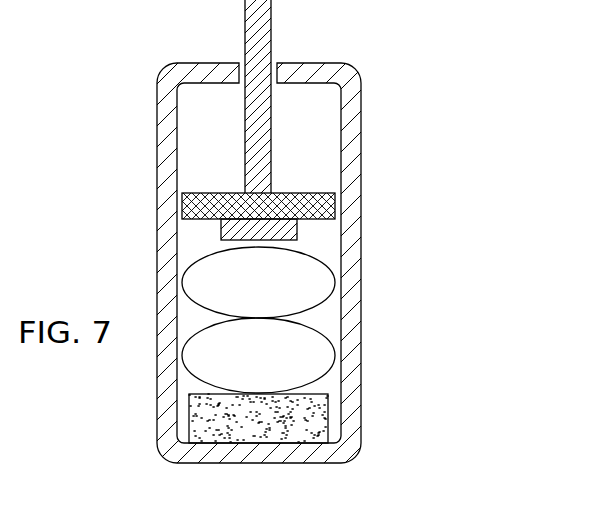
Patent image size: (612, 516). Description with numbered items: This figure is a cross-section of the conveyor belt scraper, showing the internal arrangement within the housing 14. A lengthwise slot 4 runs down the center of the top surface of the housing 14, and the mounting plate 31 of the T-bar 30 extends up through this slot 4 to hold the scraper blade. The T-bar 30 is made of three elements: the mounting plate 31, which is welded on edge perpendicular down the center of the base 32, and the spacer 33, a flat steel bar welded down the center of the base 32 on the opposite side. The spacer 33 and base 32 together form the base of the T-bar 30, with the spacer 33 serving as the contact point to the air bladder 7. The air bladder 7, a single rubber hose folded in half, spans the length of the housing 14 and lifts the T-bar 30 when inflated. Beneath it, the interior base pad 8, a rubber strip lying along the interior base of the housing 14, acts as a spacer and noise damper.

The lengthwise slot 4 is at (275, 63).
The T-bar 30 is at (218, 162).
The mounting plate 31 is at (263, 140).
The base 32 is at (320, 205).
The spacer 33 is at (292, 230).
The air bladder 7 is at (279, 282).
The housing 14 is at (362, 375).
The interior base pad 8 is at (293, 422).